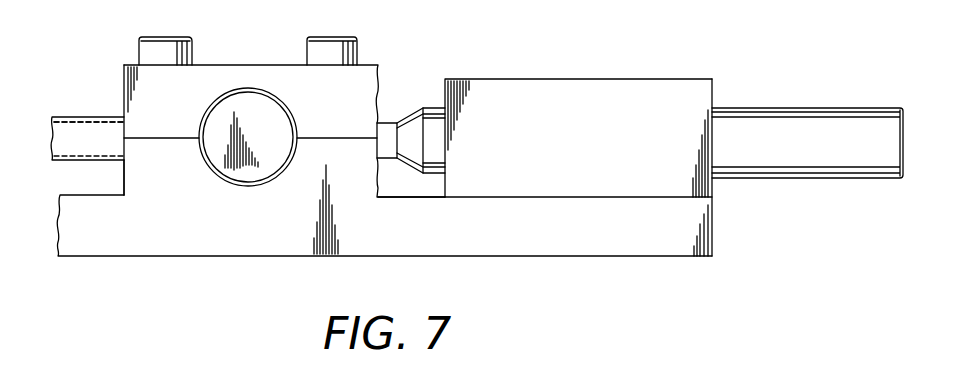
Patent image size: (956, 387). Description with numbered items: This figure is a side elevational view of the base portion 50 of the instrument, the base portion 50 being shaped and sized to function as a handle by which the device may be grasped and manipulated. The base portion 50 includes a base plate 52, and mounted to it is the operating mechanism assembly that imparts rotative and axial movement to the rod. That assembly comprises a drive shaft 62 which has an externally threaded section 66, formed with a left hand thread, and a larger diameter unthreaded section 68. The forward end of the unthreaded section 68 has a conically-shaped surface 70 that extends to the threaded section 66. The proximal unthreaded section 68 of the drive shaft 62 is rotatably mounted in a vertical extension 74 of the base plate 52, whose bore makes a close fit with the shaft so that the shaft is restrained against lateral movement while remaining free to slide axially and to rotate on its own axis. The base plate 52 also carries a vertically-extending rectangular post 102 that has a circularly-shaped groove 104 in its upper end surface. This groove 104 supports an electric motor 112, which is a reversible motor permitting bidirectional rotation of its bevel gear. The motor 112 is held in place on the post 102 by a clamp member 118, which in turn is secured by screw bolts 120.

The base portion 50 is at (100, 256).
The base plate 52 is at (508, 240).
The drive shaft 62 is at (100, 116).
The externally threaded section 66 is at (78, 120).
The unthreaded section 68 is at (815, 107).
The conically-shaped surface 70 is at (406, 112).
The vertical extension 74 is at (608, 78).
The post 102 is at (124, 170).
The groove 104 is at (236, 176).
The electric motor 112 is at (270, 168).
The clamp member 118 is at (368, 80).
The screw bolts 120 is at (307, 48).